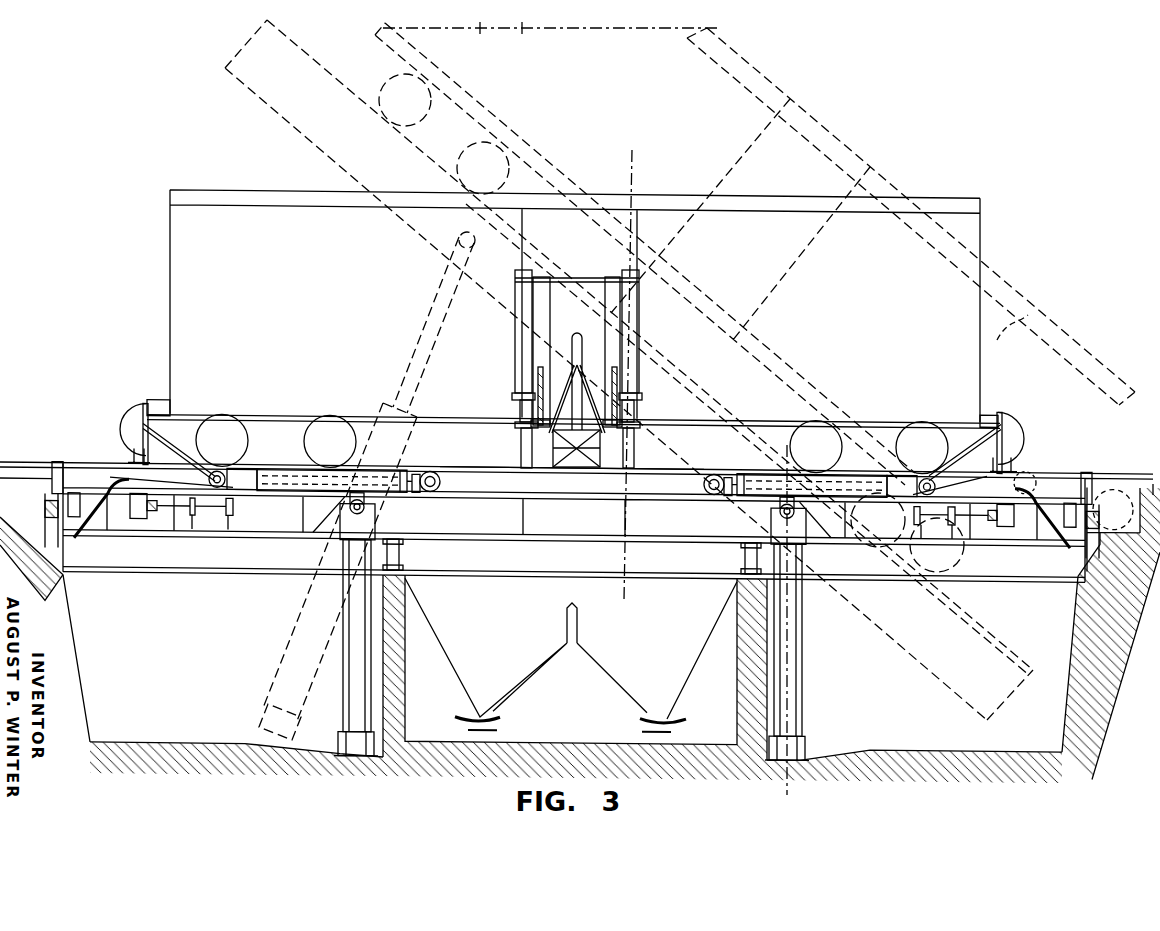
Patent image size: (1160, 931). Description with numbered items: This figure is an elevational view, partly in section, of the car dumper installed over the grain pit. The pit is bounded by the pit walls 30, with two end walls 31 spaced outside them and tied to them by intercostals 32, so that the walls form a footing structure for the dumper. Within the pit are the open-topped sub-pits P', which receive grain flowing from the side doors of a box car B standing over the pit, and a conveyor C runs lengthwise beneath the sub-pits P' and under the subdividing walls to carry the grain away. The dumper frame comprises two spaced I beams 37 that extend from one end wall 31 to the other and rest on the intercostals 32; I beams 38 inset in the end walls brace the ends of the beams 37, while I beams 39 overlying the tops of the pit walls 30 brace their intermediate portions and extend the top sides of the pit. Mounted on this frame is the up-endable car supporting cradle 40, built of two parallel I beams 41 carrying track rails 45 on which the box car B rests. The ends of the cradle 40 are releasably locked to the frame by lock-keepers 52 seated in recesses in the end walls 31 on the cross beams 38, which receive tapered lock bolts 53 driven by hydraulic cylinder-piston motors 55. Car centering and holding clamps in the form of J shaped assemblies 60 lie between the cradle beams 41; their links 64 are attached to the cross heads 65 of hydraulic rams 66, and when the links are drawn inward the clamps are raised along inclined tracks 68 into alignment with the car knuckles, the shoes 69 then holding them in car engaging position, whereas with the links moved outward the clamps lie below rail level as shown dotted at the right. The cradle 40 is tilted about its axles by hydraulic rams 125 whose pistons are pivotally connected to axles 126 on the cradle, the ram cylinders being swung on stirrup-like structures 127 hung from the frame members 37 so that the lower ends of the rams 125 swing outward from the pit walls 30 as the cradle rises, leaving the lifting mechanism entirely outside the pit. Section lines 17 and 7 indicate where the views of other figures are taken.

The pit walls 30 is at (404, 718).
The end walls 31 is at (68, 576).
The intercostals 32 is at (170, 668).
The I beams 37 is at (178, 569).
The I beams 38 is at (60, 540).
The I beams 39 is at (400, 552).
The car supporting cradle 40 is at (275, 515).
The I beams 41 is at (478, 524).
The track rails 45 is at (92, 460).
The lock-keeper 52 is at (57, 461).
The lock bolts 53 is at (122, 518).
The hydraulic cylinder-piston motor 55 is at (217, 520).
The J shaped assemblies 60 is at (120, 422).
The links 64 is at (240, 467).
The cross heads 65 is at (433, 465).
The hydraulic rams 66 is at (310, 463).
The inclined tracks 68 is at (503, 460).
The shoes 69 is at (165, 446).
The hydraulic rams 125 is at (343, 698).
The axles 126 is at (349, 508).
The stirrup-like structures 127 is at (338, 742).
The box cars B is at (968, 232).
The conveyor C is at (487, 712).
The sub-pits P' is at (571, 648).
The section line 17- 17 is at (624, 603).
The section line 7- 7 is at (787, 802).